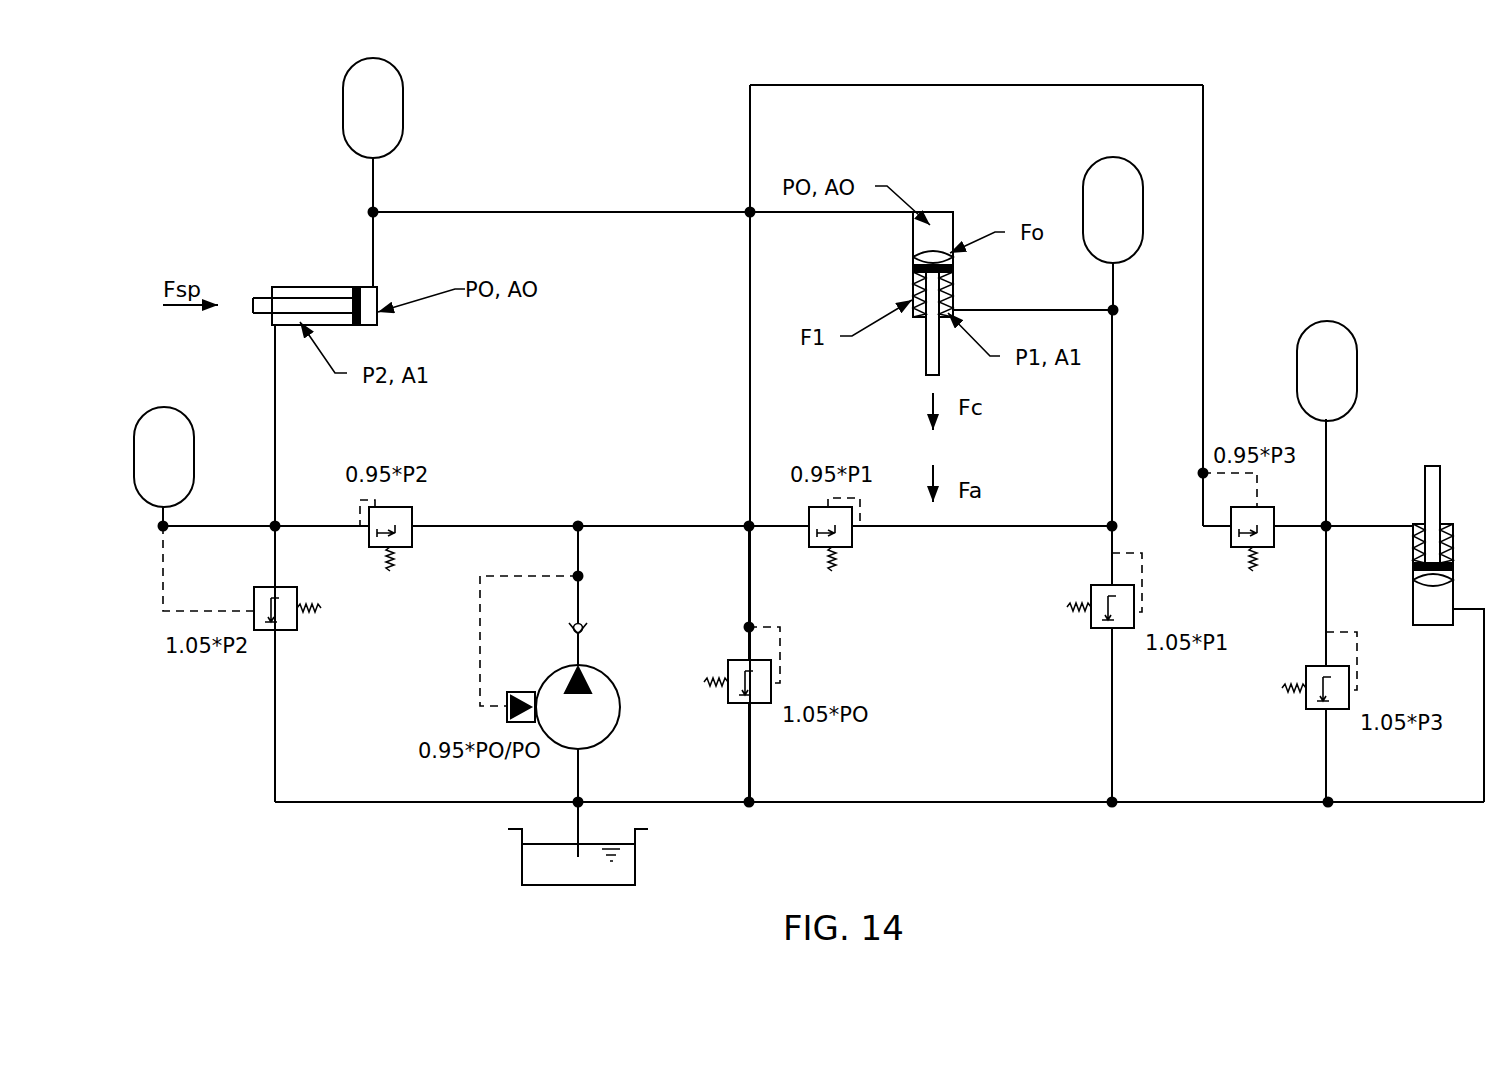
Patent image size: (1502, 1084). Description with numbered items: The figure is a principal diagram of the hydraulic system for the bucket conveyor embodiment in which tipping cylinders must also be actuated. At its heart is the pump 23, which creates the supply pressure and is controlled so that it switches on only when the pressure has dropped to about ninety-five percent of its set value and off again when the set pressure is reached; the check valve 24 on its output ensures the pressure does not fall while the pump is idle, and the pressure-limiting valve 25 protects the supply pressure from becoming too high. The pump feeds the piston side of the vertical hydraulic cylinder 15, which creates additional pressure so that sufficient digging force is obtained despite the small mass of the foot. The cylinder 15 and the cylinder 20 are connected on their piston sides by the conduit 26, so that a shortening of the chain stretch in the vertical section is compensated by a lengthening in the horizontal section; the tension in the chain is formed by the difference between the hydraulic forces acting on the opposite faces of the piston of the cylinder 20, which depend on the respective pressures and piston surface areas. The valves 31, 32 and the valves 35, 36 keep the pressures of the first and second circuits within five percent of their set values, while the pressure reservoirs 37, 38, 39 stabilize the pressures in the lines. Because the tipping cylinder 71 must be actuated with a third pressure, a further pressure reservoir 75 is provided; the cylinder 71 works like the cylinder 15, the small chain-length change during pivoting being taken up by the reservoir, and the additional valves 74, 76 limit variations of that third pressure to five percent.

The vertical hydraulic cylinder 15 is at (944, 200).
The cylinder 20 is at (330, 280).
The pump 23 is at (603, 712).
The check valve 24 is at (593, 617).
The pressure-limiting valve 25 is at (737, 665).
The conduit 26 is at (465, 210).
The valve 31 is at (832, 535).
The valve 32 is at (1090, 627).
The valve 35 is at (376, 540).
The valve 36 is at (283, 627).
The pressure reservoir 37 is at (185, 466).
The pressure reservoir 38 is at (1113, 194).
The pressure reservoir 39 is at (390, 137).
The tipping cylinder 71 is at (1451, 541).
The valve 74 is at (1238, 537).
The pressure reservoir 75 is at (1333, 357).
The valve 76 is at (1313, 670).